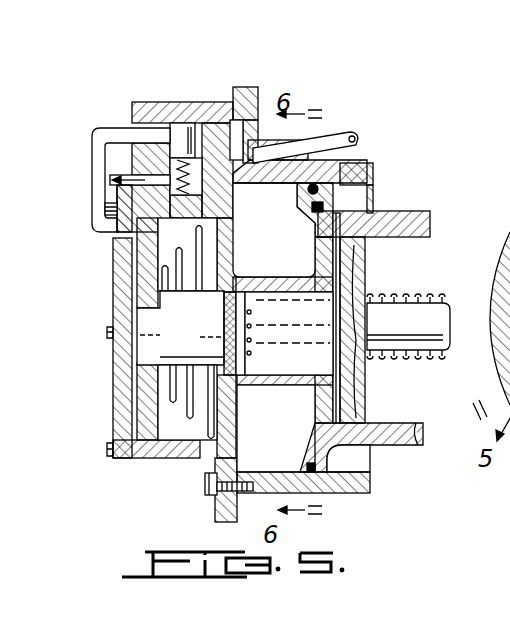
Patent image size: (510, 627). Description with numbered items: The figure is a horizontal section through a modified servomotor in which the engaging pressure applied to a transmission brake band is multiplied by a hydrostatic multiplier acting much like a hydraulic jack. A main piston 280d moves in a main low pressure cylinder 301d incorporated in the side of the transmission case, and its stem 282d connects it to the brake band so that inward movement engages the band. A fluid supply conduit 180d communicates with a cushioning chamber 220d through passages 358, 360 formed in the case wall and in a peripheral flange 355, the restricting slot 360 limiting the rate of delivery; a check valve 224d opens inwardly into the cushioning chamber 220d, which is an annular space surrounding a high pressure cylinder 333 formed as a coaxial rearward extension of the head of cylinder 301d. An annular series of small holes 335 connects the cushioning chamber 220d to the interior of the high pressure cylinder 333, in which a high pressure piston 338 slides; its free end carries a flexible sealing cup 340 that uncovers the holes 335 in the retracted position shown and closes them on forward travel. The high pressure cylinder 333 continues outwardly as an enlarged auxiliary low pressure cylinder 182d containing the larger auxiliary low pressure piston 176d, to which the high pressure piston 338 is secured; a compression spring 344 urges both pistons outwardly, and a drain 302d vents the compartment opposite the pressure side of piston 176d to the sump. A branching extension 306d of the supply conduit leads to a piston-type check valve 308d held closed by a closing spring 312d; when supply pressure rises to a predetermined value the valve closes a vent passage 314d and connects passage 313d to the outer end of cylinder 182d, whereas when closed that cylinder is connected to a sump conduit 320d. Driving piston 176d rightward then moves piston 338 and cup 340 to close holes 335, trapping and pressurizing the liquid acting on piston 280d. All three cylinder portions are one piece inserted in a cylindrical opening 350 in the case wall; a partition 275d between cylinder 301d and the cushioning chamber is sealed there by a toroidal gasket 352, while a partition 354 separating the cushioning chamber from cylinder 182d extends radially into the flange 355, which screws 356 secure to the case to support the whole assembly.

The auxiliary low pressure piston 176d is at (157, 424).
The fluid supply conduit 180d is at (357, 140).
The auxiliary low pressure cylinder 182d is at (150, 456).
The cushioning chamber 220d is at (276, 428).
The check valve 224d is at (343, 213).
The partition 275d is at (366, 258).
The main piston 280d is at (372, 292).
The stem 282d is at (415, 358).
The main low pressure cylinder 301d is at (400, 440).
The drain 302d is at (228, 450).
The branching extension 306d is at (253, 140).
The piston-type check valve 308d is at (176, 130).
The closing spring 312d is at (187, 254).
The passage 313d is at (97, 134).
The vent passage 314d is at (175, 167).
The conduit 320d is at (146, 206).
The high pressure cylinder 333 is at (286, 303).
The holes 335 is at (289, 333).
The high pressure piston 338 is at (180, 328).
The flexible sealing cup 340 is at (182, 347).
The compression spring 344 is at (281, 211).
The cylindrical opening 350 is at (373, 167).
The toroidal gasket 352 is at (328, 493).
The partition 354 is at (274, 230).
The peripheral flange 355 is at (217, 497).
The screws 356 is at (205, 478).
The passage 358 is at (281, 192).
The restricting slot 360 is at (283, 147).